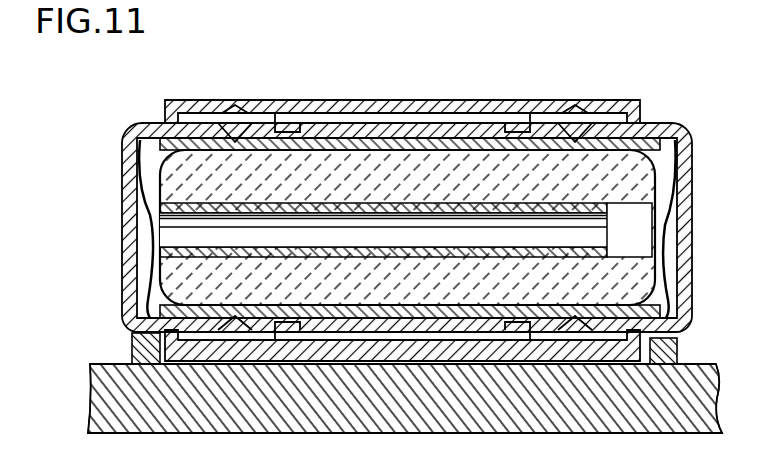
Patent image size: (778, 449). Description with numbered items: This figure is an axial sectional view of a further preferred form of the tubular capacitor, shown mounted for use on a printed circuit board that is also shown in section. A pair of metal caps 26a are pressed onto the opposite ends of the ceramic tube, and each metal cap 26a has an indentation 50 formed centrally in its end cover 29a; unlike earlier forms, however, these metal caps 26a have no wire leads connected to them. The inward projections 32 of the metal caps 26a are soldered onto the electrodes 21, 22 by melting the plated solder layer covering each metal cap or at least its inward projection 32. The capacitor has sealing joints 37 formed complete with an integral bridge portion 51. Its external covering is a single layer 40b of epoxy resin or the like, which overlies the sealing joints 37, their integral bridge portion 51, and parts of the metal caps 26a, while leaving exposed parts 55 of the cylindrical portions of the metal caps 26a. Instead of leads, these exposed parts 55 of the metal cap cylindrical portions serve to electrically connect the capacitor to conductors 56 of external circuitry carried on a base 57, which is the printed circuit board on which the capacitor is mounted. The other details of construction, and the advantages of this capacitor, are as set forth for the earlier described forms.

The electrode 21 is at (183, 207).
The electrode 22 is at (633, 153).
The metal cap 26a is at (128, 117).
The end cover 29a is at (132, 170).
The inward projection 32 is at (235, 140).
The sealing joint 37 is at (287, 128).
The layer of epoxy resin 40b is at (335, 113).
The indentation 50 is at (137, 207).
The bridge portion 51 is at (397, 140).
The exposed part 55 is at (152, 128).
The conductor 56 is at (140, 348).
The base 57 is at (125, 372).